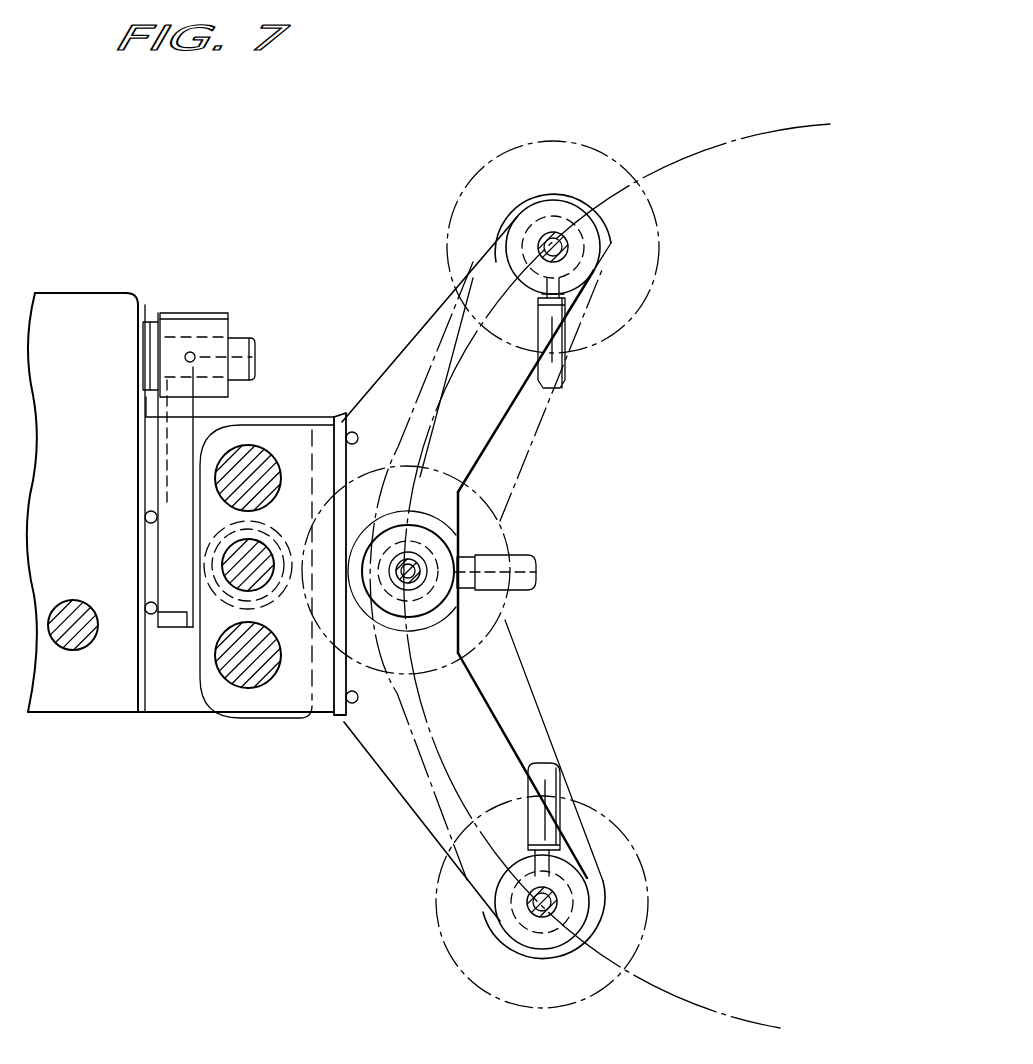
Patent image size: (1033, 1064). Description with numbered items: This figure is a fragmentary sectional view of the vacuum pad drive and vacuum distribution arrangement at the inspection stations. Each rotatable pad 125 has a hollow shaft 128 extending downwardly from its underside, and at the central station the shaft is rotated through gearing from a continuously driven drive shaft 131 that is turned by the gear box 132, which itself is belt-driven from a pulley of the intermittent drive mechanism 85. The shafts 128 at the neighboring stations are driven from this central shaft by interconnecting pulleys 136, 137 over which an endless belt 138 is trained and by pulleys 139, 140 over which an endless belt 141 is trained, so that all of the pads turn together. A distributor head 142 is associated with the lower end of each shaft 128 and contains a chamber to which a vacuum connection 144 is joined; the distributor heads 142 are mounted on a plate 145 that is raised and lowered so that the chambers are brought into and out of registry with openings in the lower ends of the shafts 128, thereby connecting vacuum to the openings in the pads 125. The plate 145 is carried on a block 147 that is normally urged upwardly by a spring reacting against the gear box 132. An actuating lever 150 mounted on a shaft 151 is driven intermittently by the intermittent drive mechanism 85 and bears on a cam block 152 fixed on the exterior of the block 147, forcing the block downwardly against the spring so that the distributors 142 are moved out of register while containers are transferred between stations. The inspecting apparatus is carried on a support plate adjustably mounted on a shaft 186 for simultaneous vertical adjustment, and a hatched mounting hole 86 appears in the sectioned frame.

The intermittent drive mechanism 85 is at (97, 268).
The mounting hole 86 is at (73, 633).
The pad 125 is at (605, 108).
The hollow shaft 128 is at (425, 563).
The drive shaft 131 is at (238, 558).
The gear box 132 is at (173, 702).
The pulley 136 is at (443, 523).
The pulley 137 is at (608, 270).
The endless belt 138 is at (538, 418).
The pulley 139 is at (443, 617).
The pulley 140 is at (585, 863).
The endless belt 141 is at (530, 713).
The distributor head 142 is at (590, 253).
The vacuum connection 144 is at (553, 373).
The plate 145 is at (400, 775).
The block 147 is at (287, 698).
The actuating lever 150 is at (172, 448).
The shaft 151 is at (237, 352).
The cam block 152 is at (177, 620).
The shaft 186 is at (263, 462).